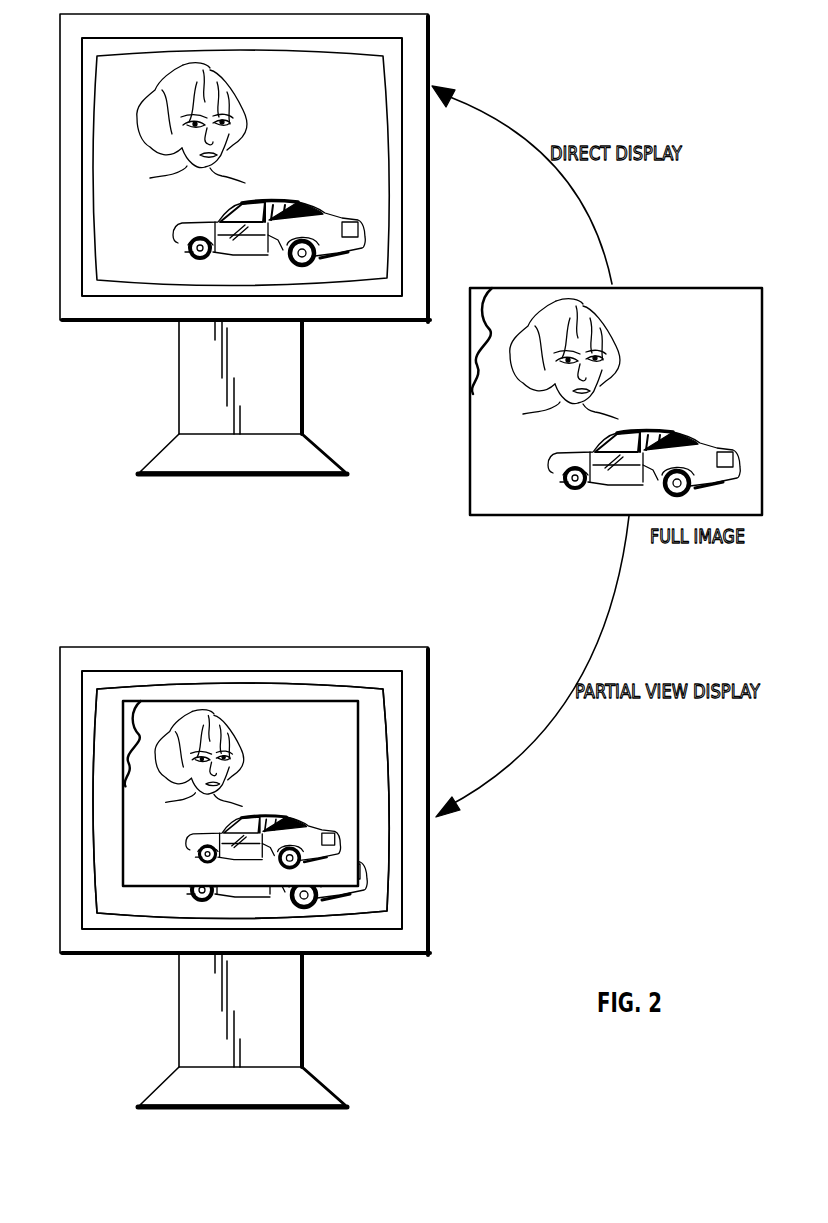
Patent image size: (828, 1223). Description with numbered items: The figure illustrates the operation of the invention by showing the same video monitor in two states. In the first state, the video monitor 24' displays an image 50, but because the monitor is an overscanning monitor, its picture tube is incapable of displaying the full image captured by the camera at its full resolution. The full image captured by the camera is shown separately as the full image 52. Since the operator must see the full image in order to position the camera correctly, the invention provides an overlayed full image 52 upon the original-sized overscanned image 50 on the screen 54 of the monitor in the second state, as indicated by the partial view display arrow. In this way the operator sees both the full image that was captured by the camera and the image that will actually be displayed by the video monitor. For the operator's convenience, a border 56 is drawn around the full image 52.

The video monitor 24' is at (275, 244).
The image 50 is at (348, 98).
The full image 52 is at (708, 355).
The screen 54 is at (102, 788).
The border 56 is at (237, 700).